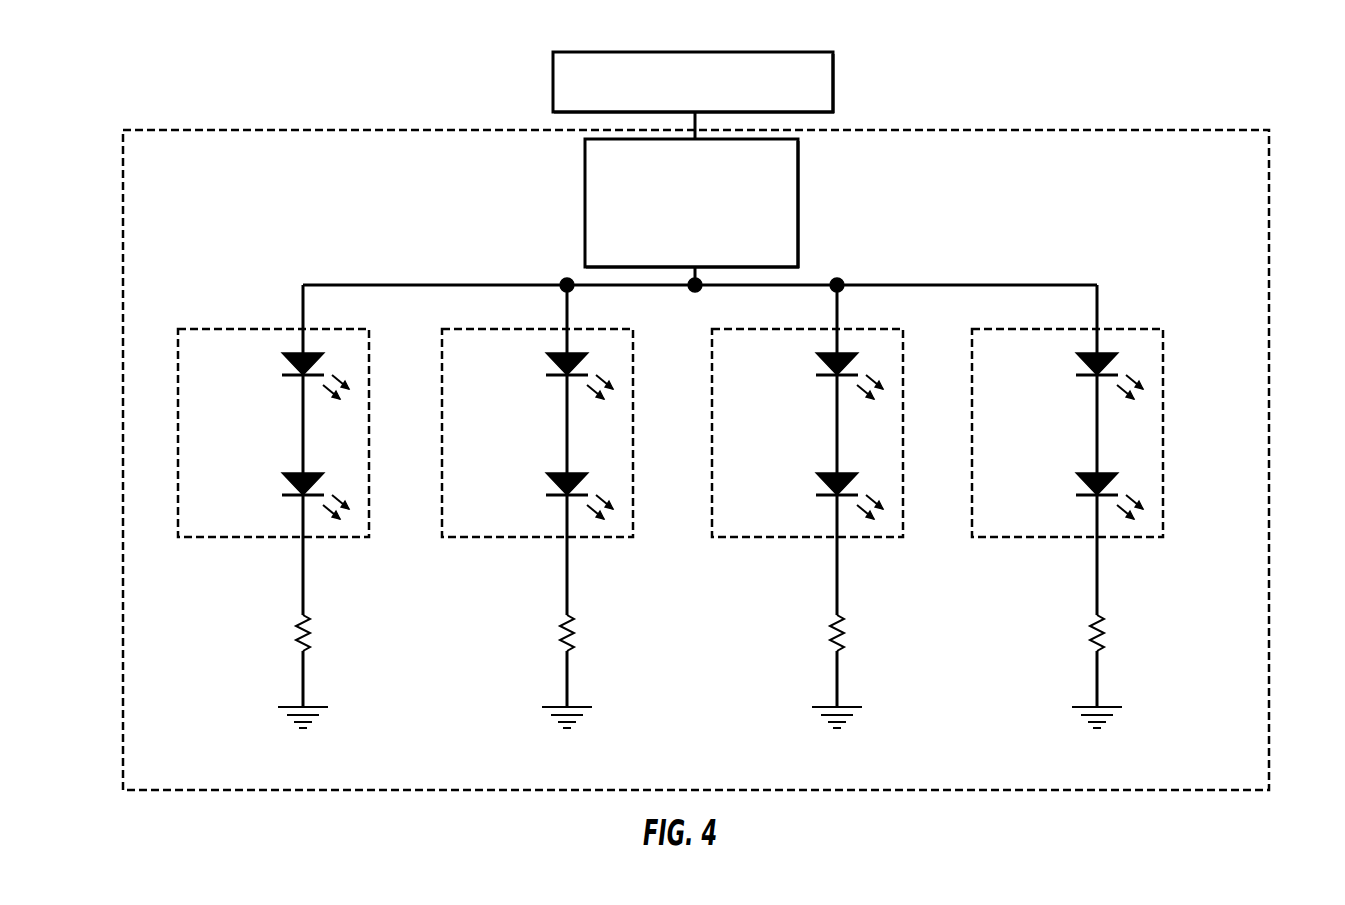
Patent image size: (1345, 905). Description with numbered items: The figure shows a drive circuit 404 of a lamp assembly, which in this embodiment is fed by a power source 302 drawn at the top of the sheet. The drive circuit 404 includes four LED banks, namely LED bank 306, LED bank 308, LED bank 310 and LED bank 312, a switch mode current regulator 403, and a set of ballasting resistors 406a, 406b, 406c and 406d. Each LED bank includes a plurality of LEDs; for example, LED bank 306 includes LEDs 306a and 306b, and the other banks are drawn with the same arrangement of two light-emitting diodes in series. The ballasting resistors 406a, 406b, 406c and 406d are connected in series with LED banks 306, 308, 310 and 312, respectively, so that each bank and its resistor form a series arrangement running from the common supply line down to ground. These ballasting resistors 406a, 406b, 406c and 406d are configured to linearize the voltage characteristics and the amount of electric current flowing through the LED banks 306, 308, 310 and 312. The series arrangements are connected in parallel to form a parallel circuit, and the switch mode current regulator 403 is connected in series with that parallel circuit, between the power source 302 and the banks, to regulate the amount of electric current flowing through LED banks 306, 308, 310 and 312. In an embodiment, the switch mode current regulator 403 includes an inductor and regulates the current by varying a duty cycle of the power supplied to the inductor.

The power source 302 is at (835, 93).
The switch mode current regulator 403 is at (798, 203).
The drive circuit 404 is at (1269, 502).
The LED bank 306 is at (322, 329).
The LED bank 308 is at (473, 329).
The LED bank 310 is at (727, 329).
The LED bank 312 is at (1115, 327).
The LED 306a is at (674, 491).
The LED 306b is at (674, 371).
The ballasting resistor 406a is at (327, 668).
The ballasting resistor 406b is at (591, 668).
The ballasting resistor 406c is at (861, 668).
The ballasting resistor 406d is at (1121, 668).